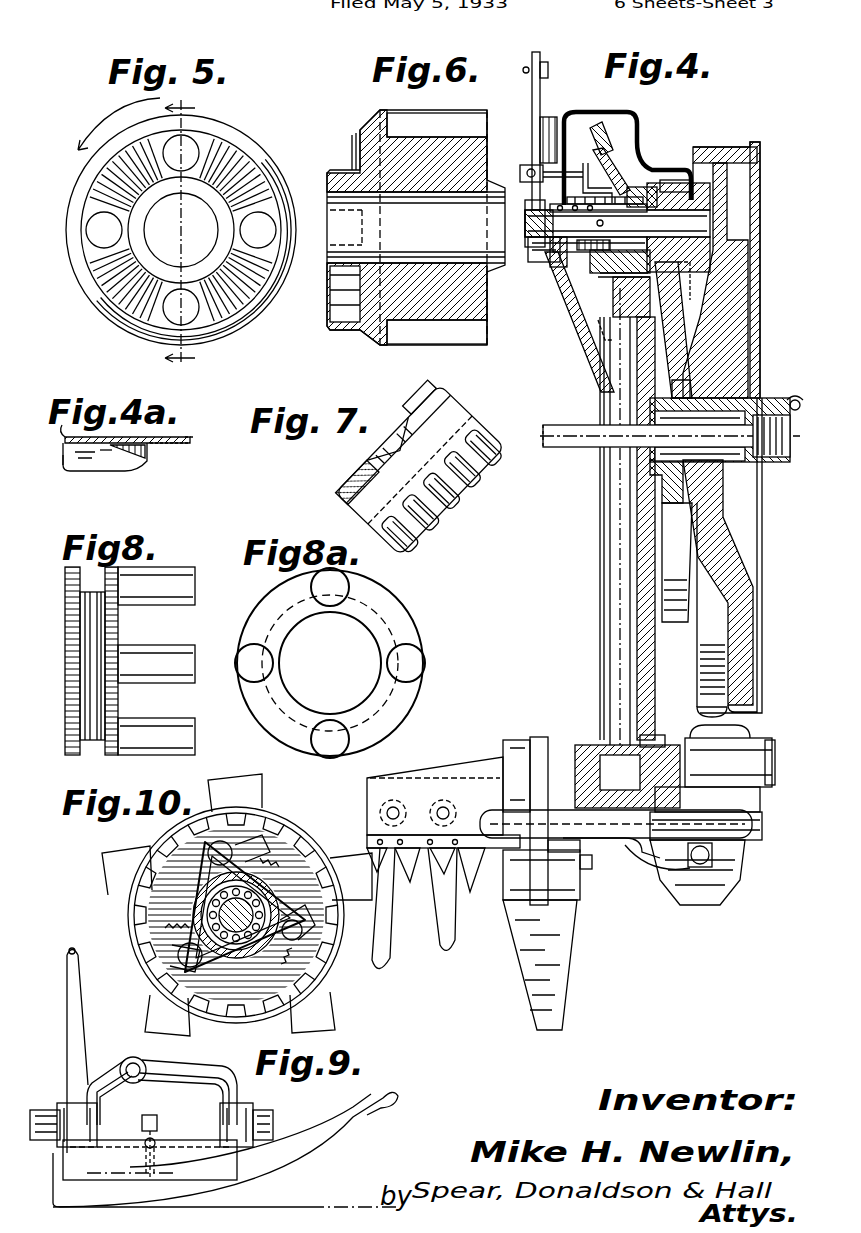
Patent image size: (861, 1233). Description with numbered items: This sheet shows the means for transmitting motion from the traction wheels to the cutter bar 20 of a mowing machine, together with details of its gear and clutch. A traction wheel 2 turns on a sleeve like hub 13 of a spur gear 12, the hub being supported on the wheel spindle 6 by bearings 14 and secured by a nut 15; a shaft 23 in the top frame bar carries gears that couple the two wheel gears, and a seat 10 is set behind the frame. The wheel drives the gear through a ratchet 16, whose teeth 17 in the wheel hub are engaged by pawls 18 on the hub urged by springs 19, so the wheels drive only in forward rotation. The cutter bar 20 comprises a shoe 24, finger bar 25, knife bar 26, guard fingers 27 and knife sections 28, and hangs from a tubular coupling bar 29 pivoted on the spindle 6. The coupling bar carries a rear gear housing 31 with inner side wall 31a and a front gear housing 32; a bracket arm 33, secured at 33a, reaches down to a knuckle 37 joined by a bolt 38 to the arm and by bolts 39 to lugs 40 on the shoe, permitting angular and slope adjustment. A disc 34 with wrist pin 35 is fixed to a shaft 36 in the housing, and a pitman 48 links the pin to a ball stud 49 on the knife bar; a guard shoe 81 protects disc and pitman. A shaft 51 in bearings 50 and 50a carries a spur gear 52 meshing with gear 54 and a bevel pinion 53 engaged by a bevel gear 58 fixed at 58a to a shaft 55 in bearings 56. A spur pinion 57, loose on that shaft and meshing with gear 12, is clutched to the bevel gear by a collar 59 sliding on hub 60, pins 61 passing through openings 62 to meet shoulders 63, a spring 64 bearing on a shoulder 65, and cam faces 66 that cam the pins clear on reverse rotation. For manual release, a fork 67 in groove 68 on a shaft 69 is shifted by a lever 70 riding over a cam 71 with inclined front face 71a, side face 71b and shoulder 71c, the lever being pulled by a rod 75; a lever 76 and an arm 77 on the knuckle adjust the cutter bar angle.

In FIG. 4, the traction wheel 2 is at (742, 606).
In FIG. 5, the wheel spindle 6 is at (293, 347).
In FIG. 10, the wheel spindle 6 is at (320, 950).
In FIG. 4, the wheel spindle 6 is at (786, 442).
In FIG. 4, the seat 10 is at (693, 352).
In FIG. 10, the spur gear 12 is at (242, 797).
In FIG. 4, the spur gear 12 is at (676, 625).
In FIG. 10, the sleeve like hub 13 is at (165, 882).
In FIG. 4, the sleeve like hub 13 is at (728, 403).
In FIG. 4, the bearings 14 is at (652, 454).
In FIG. 4, the nut 15 is at (782, 462).
In FIG. 10, the ratchet 16 is at (118, 917).
In FIG. 4, the ratchet 16 is at (705, 382).
In FIG. 10, the teeth 17 is at (165, 935).
In FIG. 10, the pawls 18 is at (240, 845).
In FIG. 4, the pawls 18 is at (718, 395).
In FIG. 10, the springs 19 is at (268, 860).
In FIG. 4, the cutter bar 20 is at (371, 793).
In FIG. 4, the shaft 23 is at (580, 432).
In FIG. 9, the shoe 24 is at (305, 1145).
In FIG. 4, the shoe 24 is at (548, 965).
In FIG. 4, the finger bar 25 is at (418, 776).
In FIG. 9, the knife bar 26 is at (162, 1166).
In FIG. 4, the knife bar 26 is at (385, 805).
In FIG. 4, the guard fingers 27 is at (445, 920).
In FIG. 4, the knife sections 28 is at (405, 925).
In FIG. 4, the tubular coupling bar 29 is at (602, 575).
In FIG. 4A, the gear housing 31 is at (56, 444).
In FIG. 4, the gear housing 31 is at (540, 100).
In FIG. 4A, the inner side wall 31a is at (165, 447).
In FIG. 4, the gear housing 32 is at (745, 745).
In FIG. 4, the bracket arm 33 is at (645, 856).
In FIG. 4, the securing point 33a is at (690, 866).
In FIG. 4, the disc 34 is at (765, 826).
In FIG. 4, the wrist pin 35 is at (735, 890).
In FIG. 4, the shaft 36 is at (760, 800).
In FIG. 9, the knuckle 37 is at (150, 1068).
In FIG. 4, the knuckle 37 is at (507, 805).
In FIG. 4, the bolt 38 is at (495, 822).
In FIG. 9, the bolts 39 is at (38, 1110).
In FIG. 4, the bolts 39 is at (565, 760).
In FIG. 9, the lugs 40 is at (65, 1165).
In FIG. 4, the lugs 40 is at (520, 760).
In FIG. 9, the pitman 48 is at (158, 1120).
In FIG. 4, the pitman 48 is at (592, 866).
In FIG. 9, the ball stud 49 is at (160, 1138).
In FIG. 4, the ball stud 49 is at (582, 840).
In FIG. 4, the bearing 50 is at (598, 738).
In FIG. 4, the bearing 50a is at (598, 370).
In FIG. 4, the shaft 51 is at (620, 616).
In FIG. 4, the spur gear 52 is at (655, 740).
In FIG. 4, the bevel pinion 53 is at (598, 336).
In FIG. 4, the gear 54 is at (772, 760).
In FIG. 4, the shaft 55 is at (575, 258).
In FIG. 4, the bearings 56 is at (730, 197).
In FIG. 5, the spur pinion 57 is at (125, 322).
In FIG. 6, the spur pinion 57 is at (420, 327).
In FIG. 7, the spur pinion 57 is at (440, 497).
In FIG. 4, the spur pinion 57 is at (678, 185).
In FIG. 4, the bevel gear 58 is at (640, 140).
In FIG. 4, the fixing point 58a is at (617, 223).
In FIG. 8, the collar 59 is at (70, 685).
In FIG. 8A, the collar 59 is at (405, 625).
In FIG. 4, the collar 59 is at (600, 224).
In FIG. 4, the hub 60 is at (600, 300).
In FIG. 5, the pins 61 is at (130, 262).
In FIG. 8, the pins 61 is at (180, 581).
In FIG. 8A, the pins 61 is at (410, 666).
In FIG. 4, the pins 61 is at (622, 185).
In FIG. 4, the openings 62 is at (625, 160).
In FIG. 5, the shoulders 63 is at (203, 140).
In FIG. 6, the shoulders 63 is at (345, 330).
In FIG. 7, the shoulders 63 is at (452, 400).
In FIG. 4, the shoulders 63 is at (680, 165).
In FIG. 4, the spring 64 is at (592, 268).
In FIG. 4, the shoulder 65 is at (545, 242).
In FIG. 5, the cam faces 66 is at (233, 177).
In FIG. 6, the cam faces 66 is at (360, 170).
In FIG. 7, the cam faces 66 is at (395, 438).
In FIG. 4, the fork 67 is at (600, 125).
In FIG. 8, the annular groove 68 is at (80, 597).
In FIG. 8A, the annular groove 68 is at (383, 615).
In FIG. 4, the annular groove 68 is at (610, 290).
In FIG. 4, the shaft 69 is at (568, 122).
In FIG. 4, the lever 70 is at (532, 88).
In FIG. 4A, the cam 71 is at (98, 472).
In FIG. 4, the cam 71 is at (545, 140).
In FIG. 4A, the front face 71a is at (100, 462).
In FIG. 4A, the side face 71b is at (108, 472).
In FIG. 4A, the shoulder 71c is at (68, 468).
In FIG. 4, the rod 75 is at (525, 68).
In FIG. 4, the lever 76 is at (540, 200).
In FIG. 9, the arm 77 is at (67, 1005).
In FIG. 4, the arm 77 is at (538, 745).
In FIG. 4, the shoe 81 is at (730, 850).